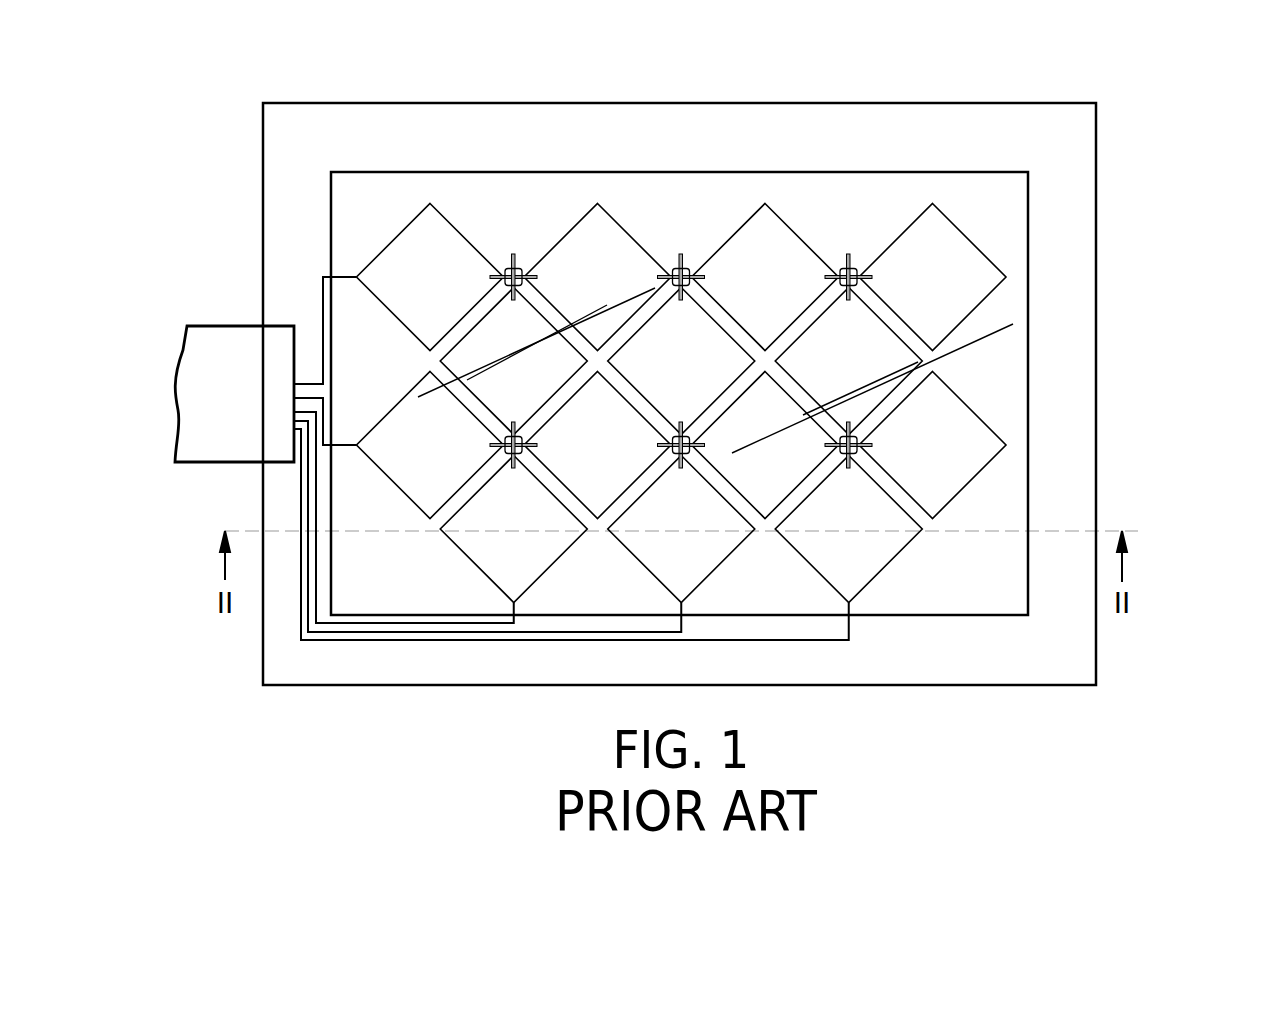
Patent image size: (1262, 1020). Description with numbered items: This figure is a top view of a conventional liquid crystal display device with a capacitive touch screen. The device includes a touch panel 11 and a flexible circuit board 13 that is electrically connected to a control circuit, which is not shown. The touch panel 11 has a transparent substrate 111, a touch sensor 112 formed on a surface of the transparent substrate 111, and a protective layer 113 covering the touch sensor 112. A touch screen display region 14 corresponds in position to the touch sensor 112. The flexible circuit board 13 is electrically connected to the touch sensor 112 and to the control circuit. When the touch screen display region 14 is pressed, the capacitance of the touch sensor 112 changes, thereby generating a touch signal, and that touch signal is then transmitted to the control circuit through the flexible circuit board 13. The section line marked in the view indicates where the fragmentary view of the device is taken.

The touch panel 11 is at (1142, 294).
The transparent substrate 111 is at (1096, 453).
The touch sensor 112 is at (980, 415).
The protective layer 113 is at (1017, 495).
The flexible circuit board 13 is at (208, 355).
The touch screen display region 14 is at (684, 220).